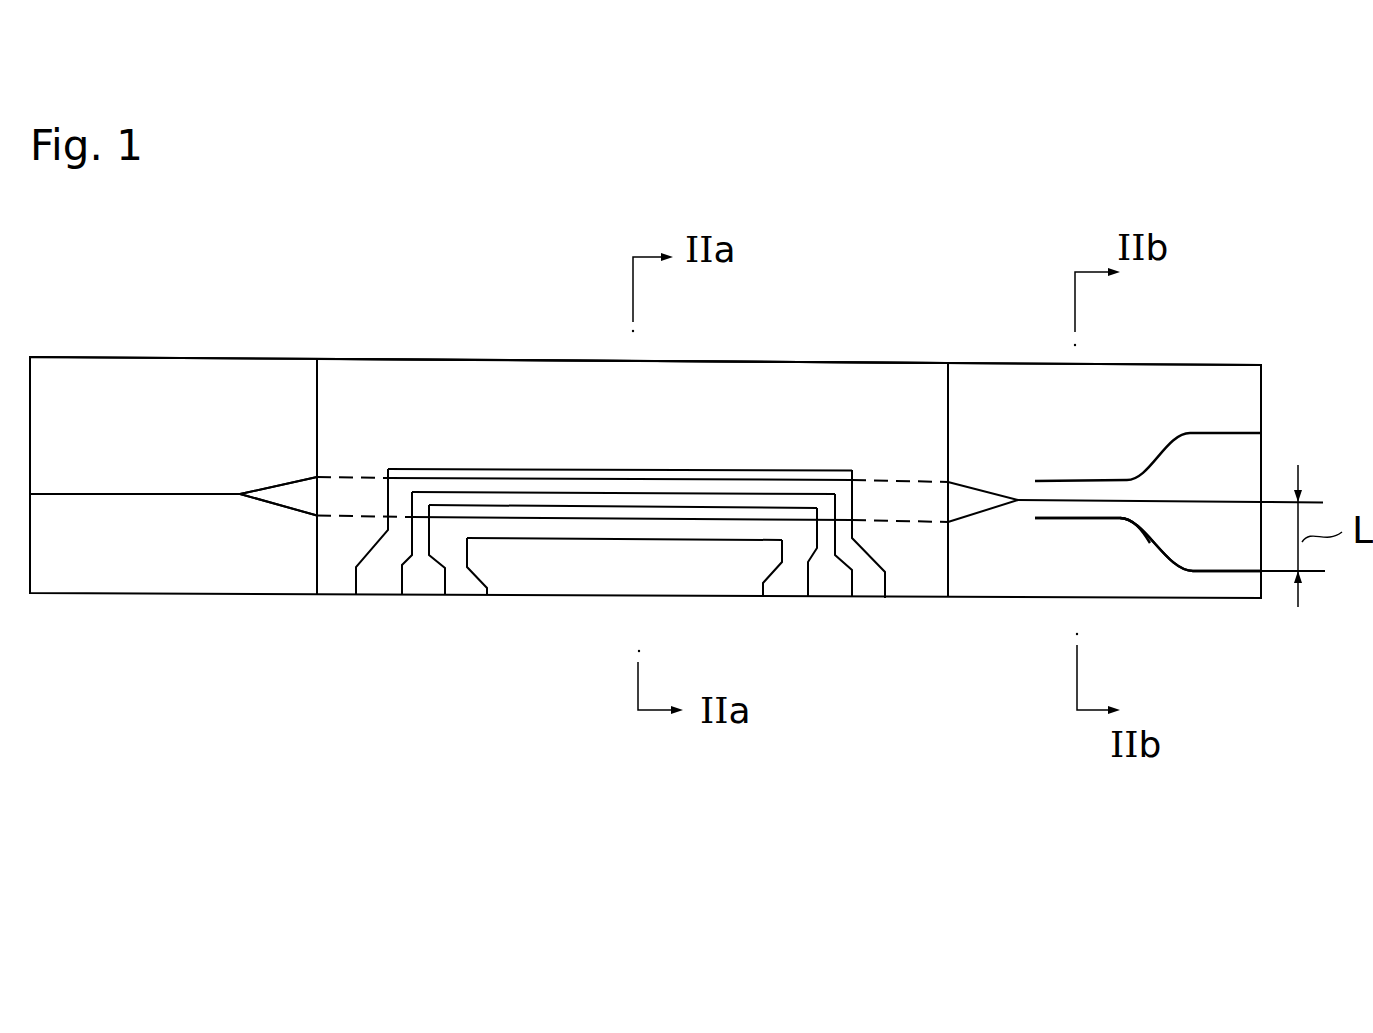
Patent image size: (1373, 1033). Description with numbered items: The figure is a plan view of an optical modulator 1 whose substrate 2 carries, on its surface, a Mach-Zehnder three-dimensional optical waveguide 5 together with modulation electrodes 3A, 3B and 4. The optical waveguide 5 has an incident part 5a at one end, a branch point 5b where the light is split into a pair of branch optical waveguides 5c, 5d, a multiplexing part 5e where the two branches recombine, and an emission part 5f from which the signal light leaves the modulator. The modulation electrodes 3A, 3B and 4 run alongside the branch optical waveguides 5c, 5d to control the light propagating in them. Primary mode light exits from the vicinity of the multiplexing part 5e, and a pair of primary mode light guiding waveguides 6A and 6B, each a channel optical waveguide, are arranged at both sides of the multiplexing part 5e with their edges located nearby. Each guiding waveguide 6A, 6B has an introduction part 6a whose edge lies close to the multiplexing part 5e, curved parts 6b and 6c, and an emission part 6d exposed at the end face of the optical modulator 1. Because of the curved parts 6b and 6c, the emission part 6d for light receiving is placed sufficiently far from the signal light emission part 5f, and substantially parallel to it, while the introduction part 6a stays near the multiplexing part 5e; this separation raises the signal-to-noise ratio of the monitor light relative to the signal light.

The optical modulator 1 is at (1243, 337).
The substrate 2 is at (908, 373).
The modulation electrode 3A is at (578, 577).
The modulation electrode 3B is at (520, 372).
The modulation electrode 4 is at (547, 500).
The Mach-Zehnder three-dimensional optical waveguide 5 is at (217, 470).
The incident part 5a is at (143, 493).
The branch point 5b is at (240, 496).
The branch optical waveguide 5c is at (508, 518).
The branch optical waveguide 5d is at (493, 478).
The multiplexing part 5e is at (1020, 497).
The emission part 5f is at (1227, 498).
The primary mode light guiding waveguide 6A is at (1168, 579).
The primary mode light guiding waveguide 6B is at (1155, 412).
The introduction part 6a is at (1057, 521).
The curved part 6b is at (1142, 525).
The curved part 6c is at (1157, 547).
The emission part 6d is at (1233, 573).